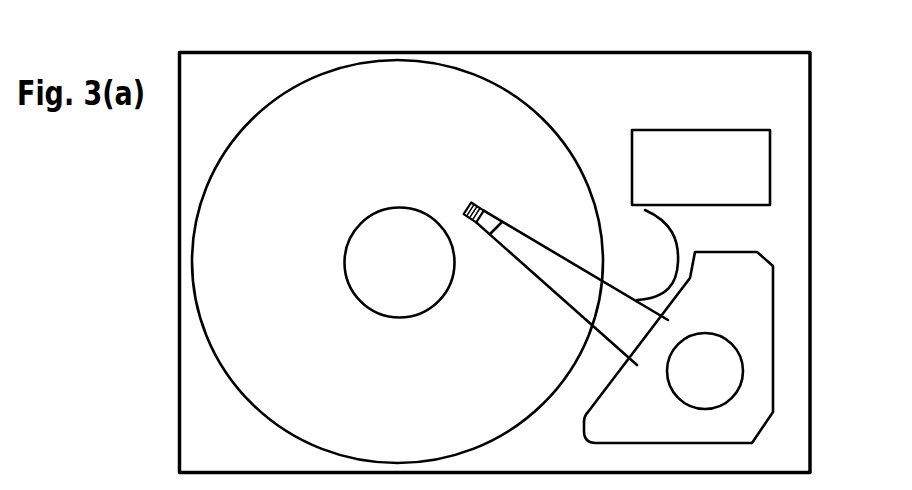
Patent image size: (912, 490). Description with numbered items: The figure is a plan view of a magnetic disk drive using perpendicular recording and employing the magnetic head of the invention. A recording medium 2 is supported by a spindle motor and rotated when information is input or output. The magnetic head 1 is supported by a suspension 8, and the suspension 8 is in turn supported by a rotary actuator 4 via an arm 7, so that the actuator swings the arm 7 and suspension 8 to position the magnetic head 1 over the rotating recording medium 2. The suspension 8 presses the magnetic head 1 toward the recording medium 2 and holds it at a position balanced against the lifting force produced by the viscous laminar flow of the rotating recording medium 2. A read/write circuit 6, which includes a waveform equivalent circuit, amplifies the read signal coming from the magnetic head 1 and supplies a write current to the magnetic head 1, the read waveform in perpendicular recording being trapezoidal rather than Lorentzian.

The magnetic head 1 is at (481, 201).
The recording medium 2 is at (233, 207).
The rotary actuator 4 is at (743, 332).
The read/write circuit 6 is at (737, 173).
The arm 7 is at (580, 290).
The suspension 8 is at (490, 234).